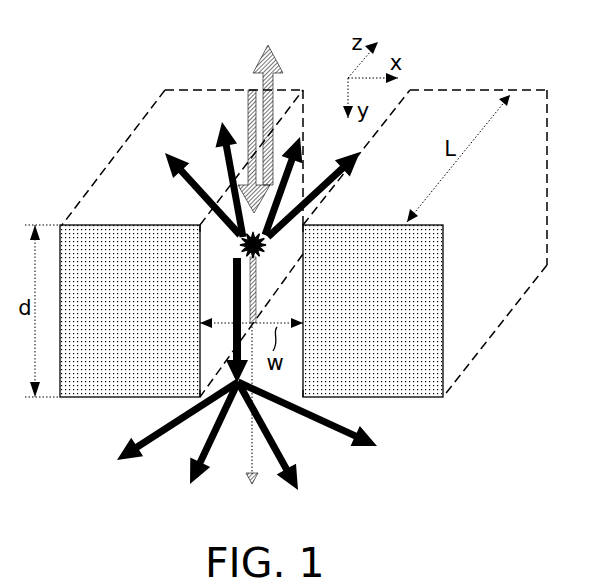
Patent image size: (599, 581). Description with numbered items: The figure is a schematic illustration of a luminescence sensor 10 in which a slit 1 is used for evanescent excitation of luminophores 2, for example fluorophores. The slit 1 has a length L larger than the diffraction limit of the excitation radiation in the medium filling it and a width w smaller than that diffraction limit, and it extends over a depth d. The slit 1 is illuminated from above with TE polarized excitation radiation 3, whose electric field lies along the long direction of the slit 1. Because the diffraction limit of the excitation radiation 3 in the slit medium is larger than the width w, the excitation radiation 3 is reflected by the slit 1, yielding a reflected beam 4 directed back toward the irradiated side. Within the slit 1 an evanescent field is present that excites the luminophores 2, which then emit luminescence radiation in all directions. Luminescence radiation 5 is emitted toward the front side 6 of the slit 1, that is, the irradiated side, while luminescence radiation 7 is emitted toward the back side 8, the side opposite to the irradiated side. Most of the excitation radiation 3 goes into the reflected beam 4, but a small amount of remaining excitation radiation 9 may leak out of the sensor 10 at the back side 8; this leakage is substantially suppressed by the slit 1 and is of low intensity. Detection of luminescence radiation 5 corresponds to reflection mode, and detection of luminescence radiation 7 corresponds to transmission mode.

The slit 1 is at (292, 268).
The luminophores 2 is at (258, 254).
The excitation radiation 3 is at (253, 196).
The reflected beam 4 is at (268, 103).
The luminescence radiation 5 is at (259, 169).
The front side 6 is at (202, 249).
The luminescence radiation 7 is at (247, 386).
The back side 8 is at (201, 396).
The remaining excitation radiation 9 is at (251, 418).
The luminescence sensor 10 is at (97, 64).